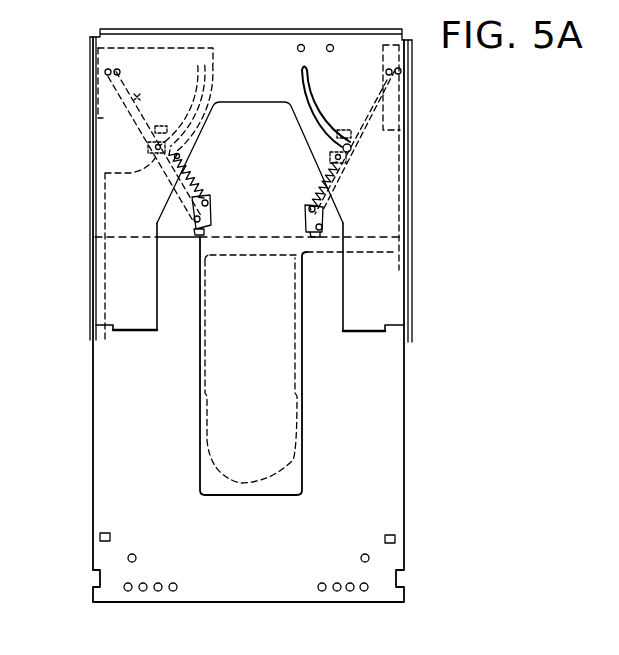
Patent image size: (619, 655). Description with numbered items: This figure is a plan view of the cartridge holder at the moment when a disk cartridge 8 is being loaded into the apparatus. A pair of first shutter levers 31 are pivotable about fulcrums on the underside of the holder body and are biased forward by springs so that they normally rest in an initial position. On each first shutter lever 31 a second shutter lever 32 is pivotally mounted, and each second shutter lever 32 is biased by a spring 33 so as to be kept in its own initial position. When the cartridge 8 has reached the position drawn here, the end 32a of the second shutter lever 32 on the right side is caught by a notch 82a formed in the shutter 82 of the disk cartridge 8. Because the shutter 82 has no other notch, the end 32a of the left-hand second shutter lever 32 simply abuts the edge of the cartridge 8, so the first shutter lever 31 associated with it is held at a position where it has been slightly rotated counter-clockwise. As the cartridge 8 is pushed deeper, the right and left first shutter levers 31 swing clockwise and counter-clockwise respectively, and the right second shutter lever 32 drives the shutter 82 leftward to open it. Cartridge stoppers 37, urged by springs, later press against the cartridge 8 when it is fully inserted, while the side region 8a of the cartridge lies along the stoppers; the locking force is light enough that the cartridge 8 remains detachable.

The disk cartridge 8 is at (305, 595).
The plate side portion 8a is at (95, 268).
The first shutter lever 31 is at (140, 96).
The second shutter lever 32 is at (207, 201).
The end of second shutter lever 32a is at (207, 232).
The spring 33 is at (290, 97).
The cartridge stopper 37 is at (93, 90).
The shutter 82 is at (292, 476).
The notch 82a is at (306, 250).